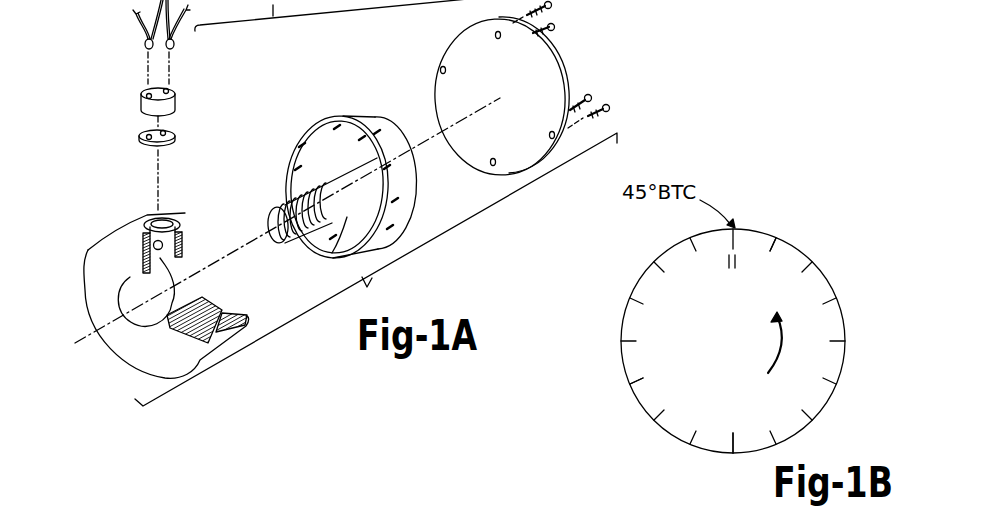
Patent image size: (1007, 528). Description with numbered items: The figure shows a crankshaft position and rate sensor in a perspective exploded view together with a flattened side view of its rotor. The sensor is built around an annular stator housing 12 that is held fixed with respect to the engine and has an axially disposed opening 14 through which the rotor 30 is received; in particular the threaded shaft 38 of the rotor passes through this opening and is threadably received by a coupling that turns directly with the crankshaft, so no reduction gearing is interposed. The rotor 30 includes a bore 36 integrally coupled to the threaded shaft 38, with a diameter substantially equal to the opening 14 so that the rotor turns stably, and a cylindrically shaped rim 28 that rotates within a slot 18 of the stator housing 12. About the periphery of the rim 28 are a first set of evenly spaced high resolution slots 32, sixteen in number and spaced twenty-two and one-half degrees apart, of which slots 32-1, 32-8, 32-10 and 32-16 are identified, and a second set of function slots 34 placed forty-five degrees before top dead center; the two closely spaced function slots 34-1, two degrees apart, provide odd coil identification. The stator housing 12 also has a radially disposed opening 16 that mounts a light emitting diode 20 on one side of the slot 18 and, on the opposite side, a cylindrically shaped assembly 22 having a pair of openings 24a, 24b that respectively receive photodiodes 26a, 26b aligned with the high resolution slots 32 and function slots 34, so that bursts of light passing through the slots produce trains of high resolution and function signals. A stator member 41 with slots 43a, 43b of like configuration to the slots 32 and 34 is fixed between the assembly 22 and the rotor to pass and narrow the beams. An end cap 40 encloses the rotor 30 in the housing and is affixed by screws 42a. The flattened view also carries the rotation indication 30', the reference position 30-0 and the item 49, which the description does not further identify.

In FIG. 1A, the stator housing 12 is at (145, 365).
In FIG. 1A, the opening 14 is at (130, 277).
In FIG. 1A, the radially disposed opening 16 is at (170, 242).
In FIG. 1A, the slot 18 is at (225, 318).
In FIG. 1A, the light emitting diode 20 is at (154, 250).
In FIG. 1A, the cylindrically shaped assembly 22 is at (176, 100).
In FIG. 1A, the opening 24a is at (148, 96).
In FIG. 1A, the opening 24b is at (168, 92).
In FIG. 1A, the photodiode 26a is at (146, 43).
In FIG. 1A, the photodiode 26b is at (174, 43).
In FIG. 1A, the rim 28 is at (418, 193).
In FIG. 1A, the rotor 30 is at (432, 218).
In FIG. 1B, the hub rotation 30' is at (761, 341).
In FIG. 1B, the reference position 30-0 is at (730, 428).
In FIG. 1A, the high resolution slots 32 is at (395, 172).
In FIG. 1B, the high resolution slot 32-1 is at (776, 243).
In FIG. 1B, the high resolution slot 32-8 is at (720, 451).
In FIG. 1B, the high resolution mark 32-10 is at (660, 408).
In FIG. 1B, the high resolution slot 32-16 is at (742, 230).
In FIG. 1A, the function slots 34 is at (382, 133).
In FIG. 1B, the function slots 34-1 is at (737, 265).
In FIG. 1A, the bore 36 is at (353, 210).
In FIG. 1A, the threaded shaft 38 is at (276, 212).
In FIG. 1A, the end cap 40 is at (445, 38).
In FIG. 1A, the stator member 41 is at (176, 146).
In FIG. 1A, the screws 42a is at (609, 100).
In FIG. 1A, the slot 43a is at (141, 136).
In FIG. 1A, the slot 43b is at (166, 134).
In FIG. 1A, the sensor 49 is at (332, 148).